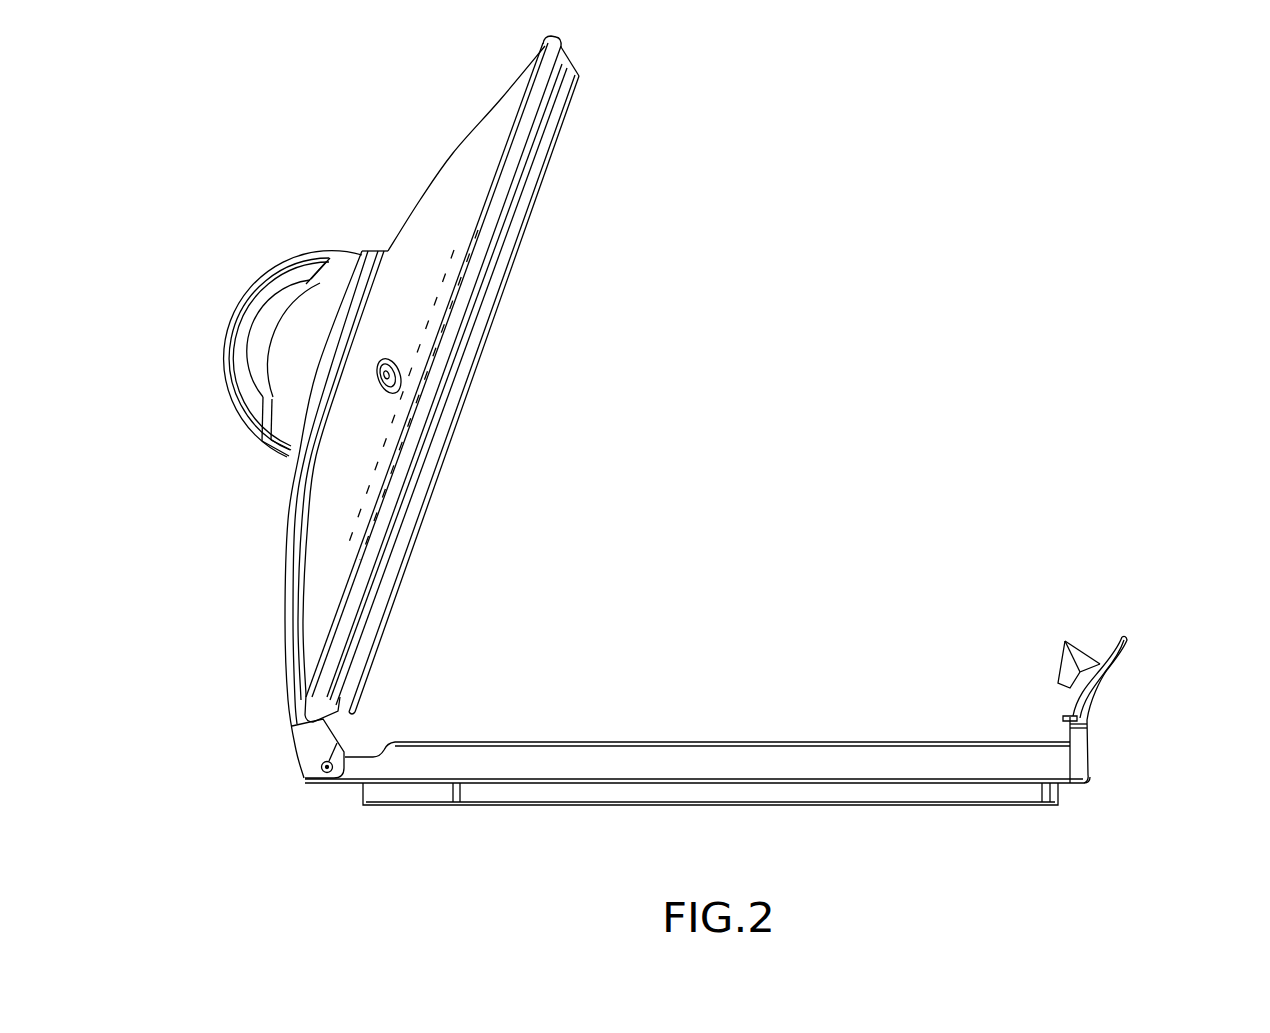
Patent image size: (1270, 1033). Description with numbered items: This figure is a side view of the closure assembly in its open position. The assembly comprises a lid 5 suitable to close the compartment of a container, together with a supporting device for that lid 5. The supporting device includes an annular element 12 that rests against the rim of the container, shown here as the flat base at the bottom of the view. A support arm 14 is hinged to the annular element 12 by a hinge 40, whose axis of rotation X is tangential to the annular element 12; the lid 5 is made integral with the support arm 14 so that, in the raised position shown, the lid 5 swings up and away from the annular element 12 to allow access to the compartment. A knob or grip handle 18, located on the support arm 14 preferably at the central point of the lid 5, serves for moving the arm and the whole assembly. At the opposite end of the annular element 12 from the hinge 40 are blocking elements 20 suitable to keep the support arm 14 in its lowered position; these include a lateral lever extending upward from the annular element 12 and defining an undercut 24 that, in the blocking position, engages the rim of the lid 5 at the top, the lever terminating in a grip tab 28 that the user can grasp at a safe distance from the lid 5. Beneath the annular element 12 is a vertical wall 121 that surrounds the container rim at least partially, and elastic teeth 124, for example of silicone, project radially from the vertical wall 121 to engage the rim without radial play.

The lid 5 is at (477, 163).
The annular element 12 is at (706, 732).
The support arm 14 is at (287, 617).
The grip handle 18 is at (246, 302).
The blocking elements 20 is at (1109, 610).
The undercut 24 is at (1066, 719).
The grip tab 28 is at (1130, 657).
The hinge 40 is at (300, 779).
The vertical wall 121 is at (872, 790).
The elastic teeth 124 is at (462, 790).
The axis of rotation X is at (355, 723).